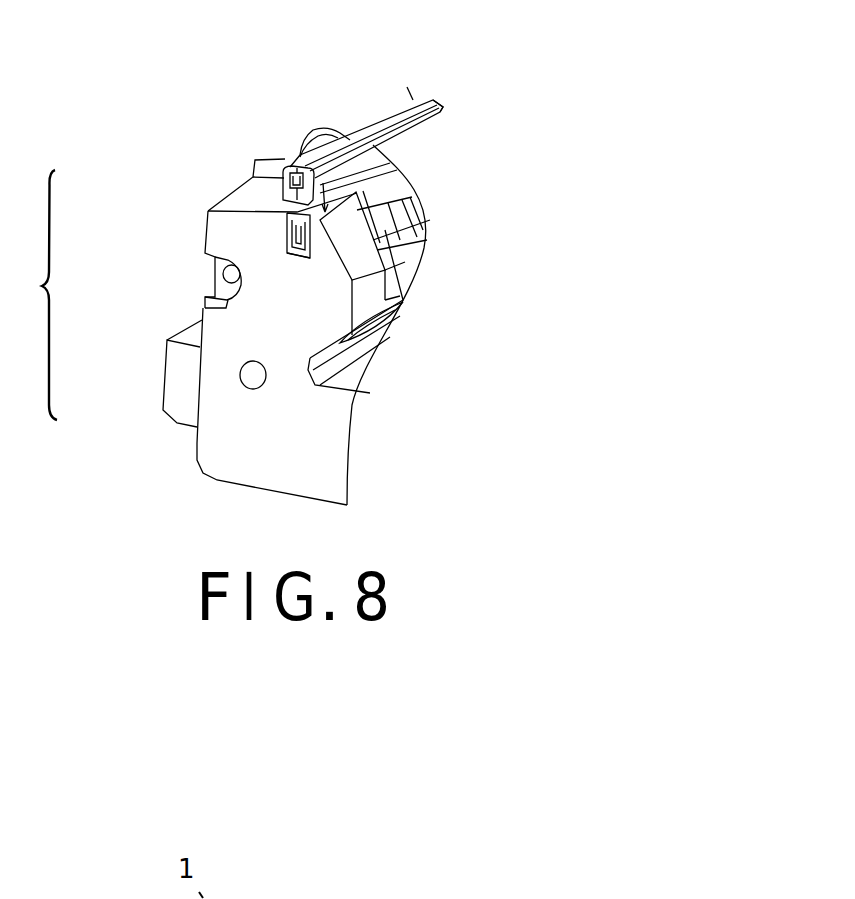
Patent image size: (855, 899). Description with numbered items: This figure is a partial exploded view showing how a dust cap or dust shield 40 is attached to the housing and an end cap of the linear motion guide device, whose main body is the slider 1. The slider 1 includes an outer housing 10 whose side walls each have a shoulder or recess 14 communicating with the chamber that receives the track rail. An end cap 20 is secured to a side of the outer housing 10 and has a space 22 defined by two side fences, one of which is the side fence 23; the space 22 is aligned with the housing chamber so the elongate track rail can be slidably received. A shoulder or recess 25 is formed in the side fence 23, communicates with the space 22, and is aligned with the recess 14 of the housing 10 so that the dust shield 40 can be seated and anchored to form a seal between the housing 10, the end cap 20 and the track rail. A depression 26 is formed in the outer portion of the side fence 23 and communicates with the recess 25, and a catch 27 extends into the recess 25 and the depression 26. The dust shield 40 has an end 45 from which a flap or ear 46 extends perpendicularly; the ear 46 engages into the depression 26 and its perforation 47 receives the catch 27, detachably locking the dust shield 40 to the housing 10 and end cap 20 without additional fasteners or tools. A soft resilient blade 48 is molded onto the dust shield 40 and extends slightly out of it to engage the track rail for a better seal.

The slider 1 is at (180, 98).
The outer housing 10 is at (318, 133).
The shoulder or recess 14 is at (372, 190).
The end cap 20 is at (209, 478).
The space 22 is at (357, 388).
The side fence 23 is at (217, 363).
The shoulder or recess 25 is at (385, 242).
The depression 26 is at (300, 238).
The catch 27 is at (298, 237).
The dust shield 40 is at (386, 120).
The end 45 is at (293, 157).
The ear 46 is at (292, 198).
The perforation 47 is at (298, 185).
The resilient blade 48 is at (436, 101).